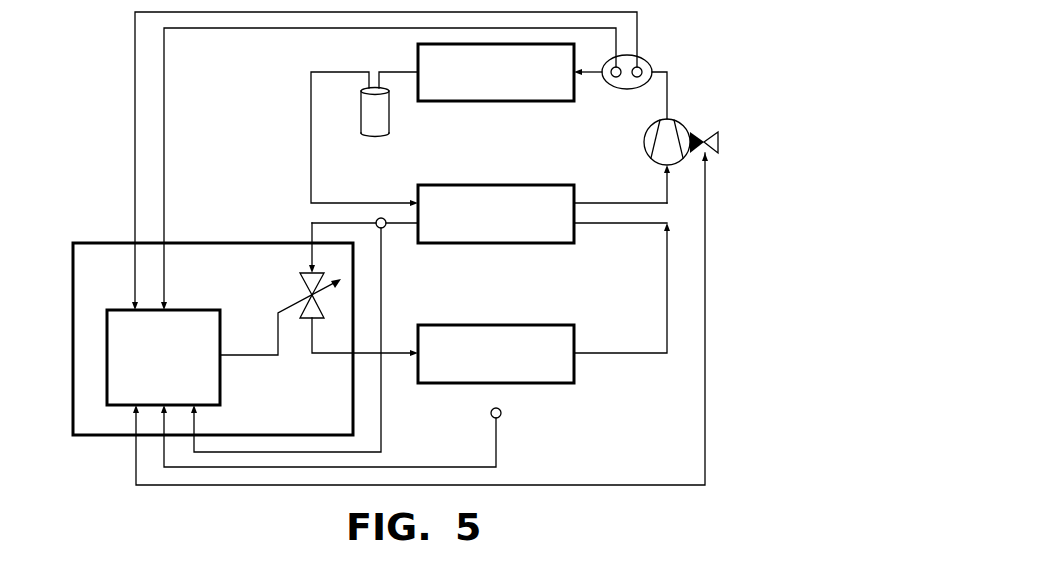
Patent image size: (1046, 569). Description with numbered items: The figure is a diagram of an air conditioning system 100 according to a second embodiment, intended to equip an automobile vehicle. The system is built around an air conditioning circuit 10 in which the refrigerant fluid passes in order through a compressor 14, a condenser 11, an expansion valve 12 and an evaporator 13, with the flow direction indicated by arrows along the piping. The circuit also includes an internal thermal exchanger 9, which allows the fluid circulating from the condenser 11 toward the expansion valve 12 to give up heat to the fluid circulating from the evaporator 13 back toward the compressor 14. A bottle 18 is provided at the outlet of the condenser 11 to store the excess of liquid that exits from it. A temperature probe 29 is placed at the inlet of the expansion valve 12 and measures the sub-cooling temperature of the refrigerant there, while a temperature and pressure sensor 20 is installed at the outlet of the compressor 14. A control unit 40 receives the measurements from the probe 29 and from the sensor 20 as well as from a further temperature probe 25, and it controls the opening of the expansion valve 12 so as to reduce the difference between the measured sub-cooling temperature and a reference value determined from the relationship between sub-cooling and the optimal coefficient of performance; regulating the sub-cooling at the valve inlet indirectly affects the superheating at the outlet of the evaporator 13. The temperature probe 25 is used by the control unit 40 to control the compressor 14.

The air conditioning system 100 is at (114, 125).
The control unit 40 is at (213, 383).
The condenser 11 is at (520, 80).
The bottle 18 is at (383, 123).
The temperature and pressure sensor 20 is at (651, 60).
The compressor 14 is at (681, 116).
The internal thermal exchanger 9 is at (530, 195).
The evaporator 13 is at (513, 335).
The air conditioning circuit 10 is at (648, 294).
The expansion valve 12 is at (306, 287).
The temperature probe 29 is at (383, 229).
The temperature probe 25 is at (502, 411).